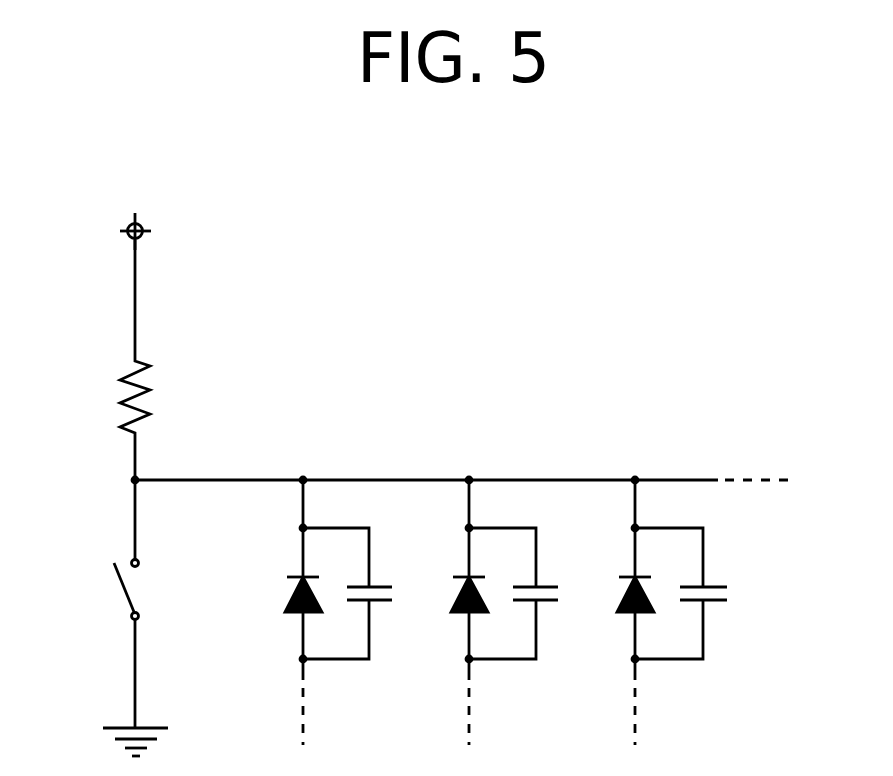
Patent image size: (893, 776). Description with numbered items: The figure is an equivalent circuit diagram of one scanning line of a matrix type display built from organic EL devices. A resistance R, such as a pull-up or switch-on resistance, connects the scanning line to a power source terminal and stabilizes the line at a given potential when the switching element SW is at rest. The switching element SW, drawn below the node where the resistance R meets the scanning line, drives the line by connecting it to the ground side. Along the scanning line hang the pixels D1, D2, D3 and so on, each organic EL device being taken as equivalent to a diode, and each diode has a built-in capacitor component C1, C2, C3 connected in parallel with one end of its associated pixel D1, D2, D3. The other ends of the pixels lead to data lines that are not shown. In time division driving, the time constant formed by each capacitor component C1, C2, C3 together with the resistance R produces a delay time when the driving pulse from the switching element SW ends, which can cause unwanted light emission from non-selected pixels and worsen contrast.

The resistance R is at (111, 419).
The switching element SW is at (111, 618).
The pixel D1 is at (288, 593).
The capacitor component C1 is at (363, 593).
The pixel D2 is at (454, 593).
The capacitor component C2 is at (529, 593).
The pixel D3 is at (620, 593).
The capacitor component C3 is at (695, 593).